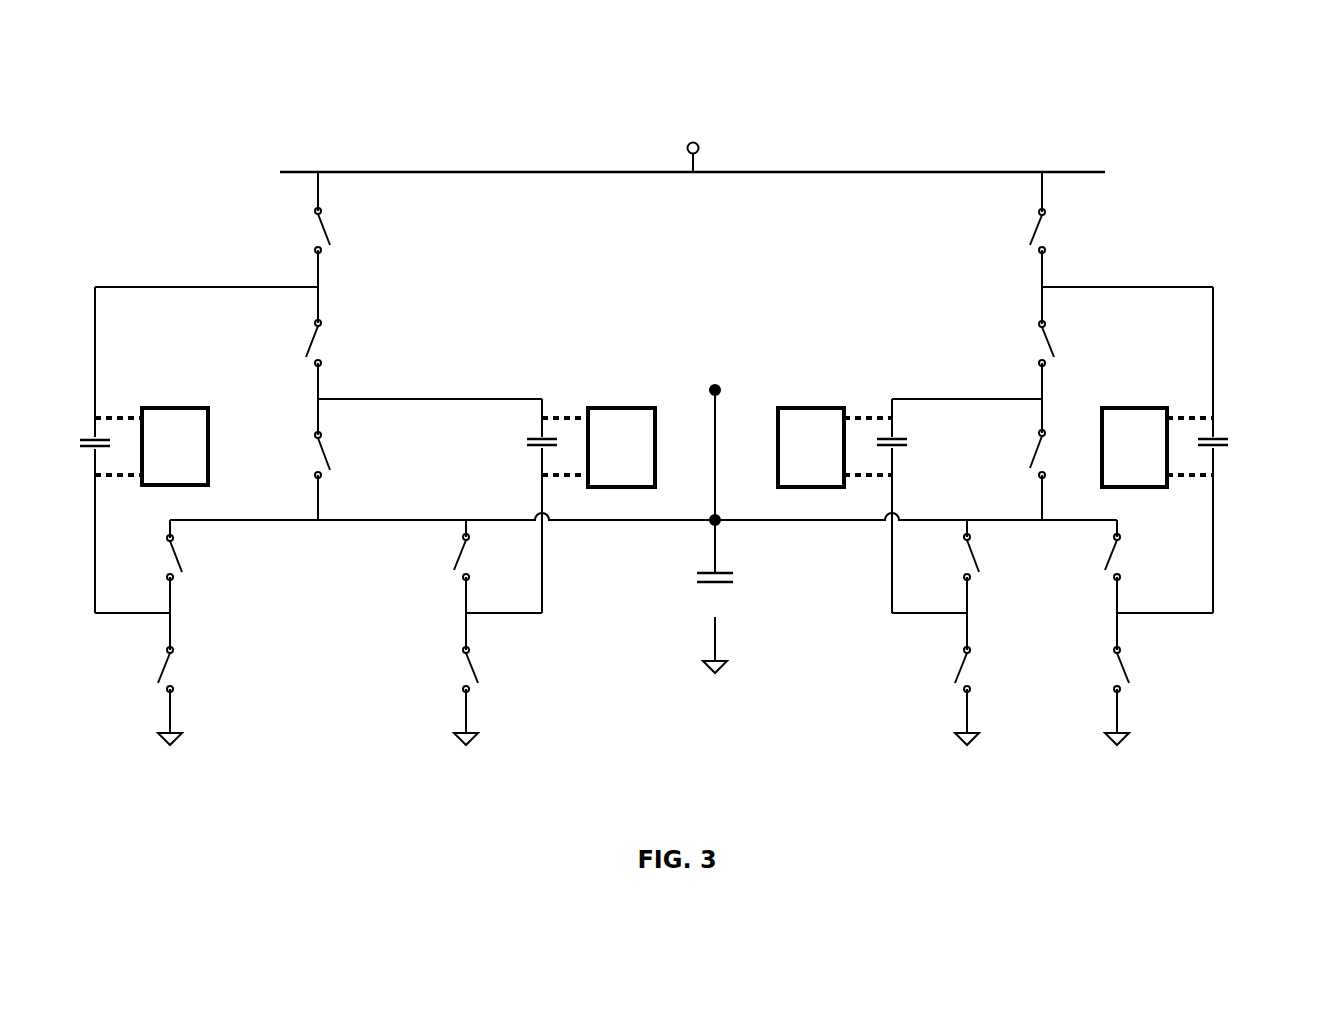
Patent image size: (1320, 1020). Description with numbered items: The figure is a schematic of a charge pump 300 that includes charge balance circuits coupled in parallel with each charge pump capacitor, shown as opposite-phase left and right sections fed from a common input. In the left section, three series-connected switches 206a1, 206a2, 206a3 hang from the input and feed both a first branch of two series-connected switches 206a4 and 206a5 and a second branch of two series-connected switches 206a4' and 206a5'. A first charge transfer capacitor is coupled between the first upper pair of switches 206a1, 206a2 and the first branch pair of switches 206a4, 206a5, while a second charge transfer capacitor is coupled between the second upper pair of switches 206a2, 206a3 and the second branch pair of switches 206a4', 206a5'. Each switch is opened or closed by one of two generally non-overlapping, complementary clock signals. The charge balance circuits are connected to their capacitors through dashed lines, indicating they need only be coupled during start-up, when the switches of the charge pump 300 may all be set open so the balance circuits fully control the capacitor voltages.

The charge pump 300 is at (61, 75).
The switch 206a1 is at (345, 234).
The switch 206a2 is at (291, 345).
The switch 206a3 is at (345, 465).
The switch 206a4 is at (230, 561).
The switch 206a4' is at (394, 568).
The switch 206a5 is at (108, 669).
The switch 206a5' is at (531, 669).